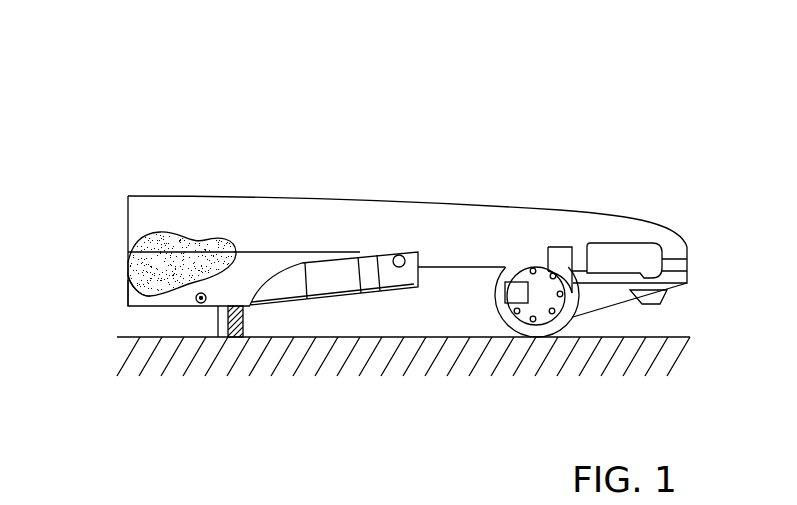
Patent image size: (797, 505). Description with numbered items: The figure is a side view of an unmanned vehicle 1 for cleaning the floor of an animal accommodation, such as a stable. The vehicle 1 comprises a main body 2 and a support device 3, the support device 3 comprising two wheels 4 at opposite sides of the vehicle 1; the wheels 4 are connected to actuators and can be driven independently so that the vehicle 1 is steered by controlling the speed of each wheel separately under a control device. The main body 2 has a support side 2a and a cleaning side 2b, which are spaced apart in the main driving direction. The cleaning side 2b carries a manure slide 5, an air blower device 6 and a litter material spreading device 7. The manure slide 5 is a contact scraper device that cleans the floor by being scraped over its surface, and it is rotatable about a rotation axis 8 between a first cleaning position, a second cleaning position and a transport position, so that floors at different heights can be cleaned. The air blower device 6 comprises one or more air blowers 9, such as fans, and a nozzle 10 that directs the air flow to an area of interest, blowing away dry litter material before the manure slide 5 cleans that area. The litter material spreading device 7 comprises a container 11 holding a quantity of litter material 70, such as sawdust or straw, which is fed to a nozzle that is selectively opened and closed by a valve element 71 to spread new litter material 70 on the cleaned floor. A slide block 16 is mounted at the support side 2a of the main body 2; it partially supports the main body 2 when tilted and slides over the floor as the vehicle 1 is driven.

The unmanned vehicle 1 is at (431, 162).
The main body 2 is at (508, 228).
The support side 2a is at (583, 217).
The cleaning side 2b is at (227, 196).
The support device 3 is at (586, 331).
The wheels 4 is at (507, 327).
The manure slide 5 is at (237, 337).
The air blower device 6 is at (365, 270).
The litter material spreading device 7 is at (119, 305).
The rotation axis 8 is at (201, 303).
The air blowers 9 is at (320, 277).
The nozzle 10 is at (250, 305).
The container 11 is at (168, 235).
The slide block 16 is at (652, 304).
The litter material 70 is at (150, 248).
The valve element 71 is at (144, 285).